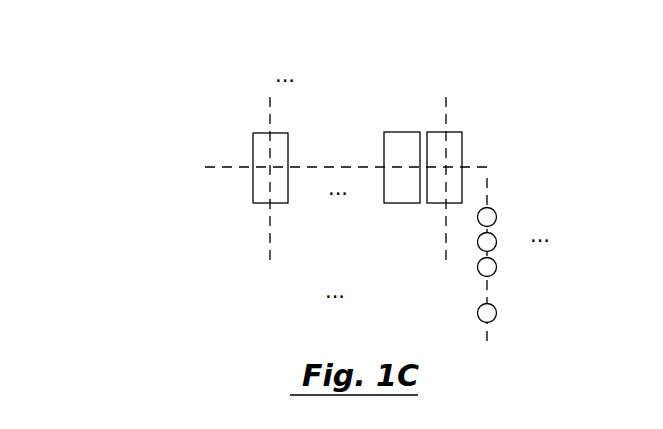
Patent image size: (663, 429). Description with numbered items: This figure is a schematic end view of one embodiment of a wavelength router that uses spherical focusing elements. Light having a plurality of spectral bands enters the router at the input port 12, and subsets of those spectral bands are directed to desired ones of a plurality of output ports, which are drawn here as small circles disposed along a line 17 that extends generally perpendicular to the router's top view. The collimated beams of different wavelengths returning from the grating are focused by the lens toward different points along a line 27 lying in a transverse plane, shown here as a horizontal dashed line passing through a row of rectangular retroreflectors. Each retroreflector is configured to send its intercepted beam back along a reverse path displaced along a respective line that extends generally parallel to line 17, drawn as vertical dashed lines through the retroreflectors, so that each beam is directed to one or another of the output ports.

The line 27 is at (208, 168).
The line 17 is at (490, 190).
The input port 12 is at (495, 308).